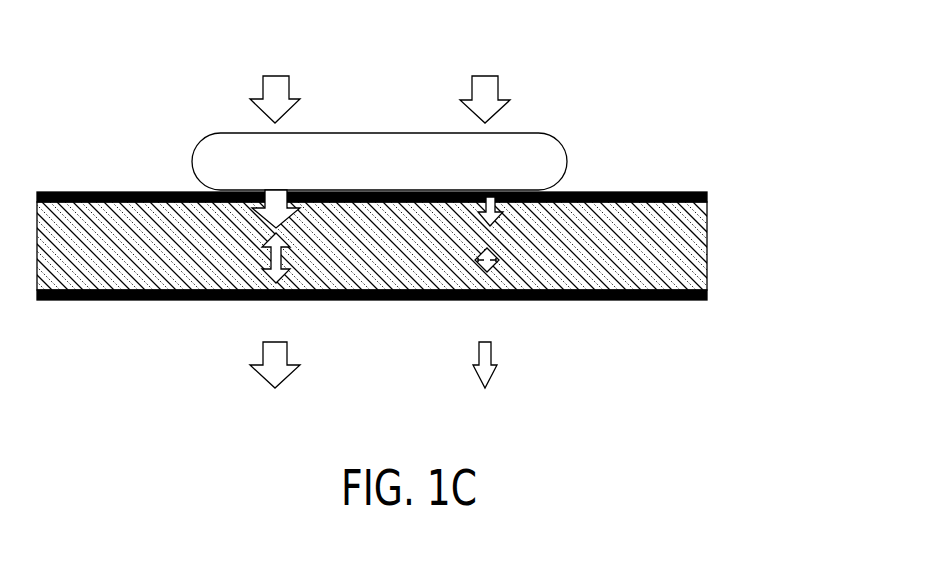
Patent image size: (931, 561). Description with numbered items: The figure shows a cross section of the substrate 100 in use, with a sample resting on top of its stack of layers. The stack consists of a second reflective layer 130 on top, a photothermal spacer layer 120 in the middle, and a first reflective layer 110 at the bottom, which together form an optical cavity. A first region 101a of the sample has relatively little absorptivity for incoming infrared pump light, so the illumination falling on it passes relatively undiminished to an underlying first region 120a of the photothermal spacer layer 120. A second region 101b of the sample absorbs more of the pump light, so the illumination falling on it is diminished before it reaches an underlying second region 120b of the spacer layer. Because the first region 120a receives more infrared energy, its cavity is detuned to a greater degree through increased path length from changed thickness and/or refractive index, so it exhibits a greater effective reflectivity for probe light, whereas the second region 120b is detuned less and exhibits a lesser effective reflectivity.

The substrate 100 is at (390, 194).
The first region of the sample 101a is at (277, 163).
The second region of the sample 101b is at (482, 162).
The first reflective layer 110 is at (708, 293).
The photothermal spacer layer 120 is at (660, 256).
The first region of the photothermal spacer layer 120a is at (258, 265).
The second region of the photothermal spacer layer 120b is at (458, 258).
The second reflective layer 130 is at (708, 197).